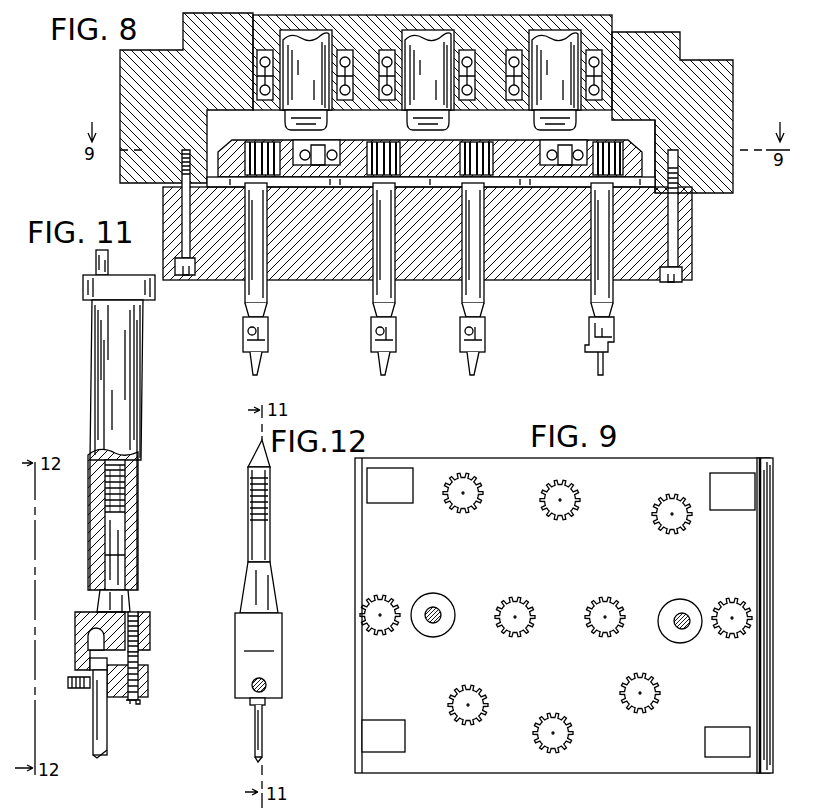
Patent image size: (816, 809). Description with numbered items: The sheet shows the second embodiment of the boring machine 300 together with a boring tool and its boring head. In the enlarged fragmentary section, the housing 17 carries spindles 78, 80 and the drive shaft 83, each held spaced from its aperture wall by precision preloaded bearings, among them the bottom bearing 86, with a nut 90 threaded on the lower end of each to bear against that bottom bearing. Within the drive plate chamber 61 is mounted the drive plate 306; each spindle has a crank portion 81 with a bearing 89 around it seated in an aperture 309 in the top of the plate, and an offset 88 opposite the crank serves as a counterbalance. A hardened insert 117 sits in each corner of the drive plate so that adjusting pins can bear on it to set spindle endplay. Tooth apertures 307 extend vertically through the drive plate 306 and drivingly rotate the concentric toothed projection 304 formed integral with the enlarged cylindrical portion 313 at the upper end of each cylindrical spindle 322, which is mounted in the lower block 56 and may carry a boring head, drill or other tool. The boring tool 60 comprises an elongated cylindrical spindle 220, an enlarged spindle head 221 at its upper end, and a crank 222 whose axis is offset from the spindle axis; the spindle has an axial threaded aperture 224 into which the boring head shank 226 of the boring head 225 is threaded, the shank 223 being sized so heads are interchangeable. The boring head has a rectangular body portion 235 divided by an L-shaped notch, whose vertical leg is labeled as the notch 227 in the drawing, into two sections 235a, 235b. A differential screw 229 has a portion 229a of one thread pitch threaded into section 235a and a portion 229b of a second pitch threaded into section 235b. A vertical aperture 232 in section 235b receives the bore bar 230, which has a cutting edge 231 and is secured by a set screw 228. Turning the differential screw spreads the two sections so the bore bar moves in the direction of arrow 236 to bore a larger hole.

In FIG. 8, the housing 17 is at (733, 183).
In FIG. 8, the second embodiment of the boring machine 300 is at (738, 118).
In FIG. 8, the spindle 78 is at (318, 75).
In FIG. 8, the bottom precision preloaded bearing 86 is at (298, 95).
In FIG. 8, the drive shaft 83 is at (440, 78).
In FIG. 8, the spindle 80 is at (567, 78).
In FIG. 8, the drive plate chamber 61 is at (655, 135).
In FIG. 8, the aperture 309 is at (368, 160).
In FIG. 8, the tooth aperture 307 is at (440, 160).
In FIG. 9, the tooth aperture 307 is at (560, 500).
In FIG. 8, the concentric toothed projection 304 is at (255, 165).
In FIG. 9, the concentric toothed projection 304 is at (463, 500).
In FIG. 8, the nut 90 is at (320, 118).
In FIG. 8, the bearing 89 is at (540, 155).
In FIG. 9, the bearing 89 is at (682, 630).
In FIG. 8, the offset 88 is at (565, 148).
In FIG. 8, the crank portion 81 is at (587, 150).
In FIG. 9, the crank portion 81 is at (672, 607).
In FIG. 8, the drive plate 306 is at (422, 187).
In FIG. 9, the drive plate 306 is at (590, 773).
In FIG. 8, the block 56 is at (685, 255).
In FIG. 8, the enlarged cylindrical portion 313 is at (272, 190).
In FIG. 8, the cylindrical spindle 322 is at (267, 298).
In FIG. 8, the boring head 225 is at (614, 335).
In FIG. 11, the boring head 225 is at (152, 614).
In FIG. 12, the boring head 225 is at (233, 612).
In FIG. 11, the crank 222 is at (108, 262).
In FIG. 11, the spindle head 221 is at (118, 290).
In FIG. 11, the spindle 220 is at (128, 365).
In FIG. 11, the boring tool 60 is at (142, 422).
In FIG. 11, the threaded aperture 224 is at (128, 530).
In FIG. 11, the shank 223 is at (125, 506).
In FIG. 12, the shank 223 is at (272, 510).
In FIG. 11, the boring head shank 226 is at (122, 598).
In FIG. 12, the boring head shank 226 is at (260, 538).
In FIG. 11, the body portion 235 is at (80, 622).
In FIG. 12, the body portion 235 is at (258, 655).
In FIG. 11, the first body section 235a is at (146, 640).
In FIG. 11, the bore 227 is at (88, 642).
In FIG. 11, the first pitch portion of differential screw 229a is at (142, 650).
In FIG. 11, the second body section 235b is at (150, 673).
In FIG. 11, the differential screw 229 is at (148, 685).
In FIG. 11, the second pitch portion of differential screw 229b is at (142, 698).
In FIG. 11, the vertical aperture 232 is at (90, 662).
In FIG. 11, the bore bar 230 is at (105, 718).
In FIG. 12, the bore bar 230 is at (265, 733).
In FIG. 11, the set screw 228 is at (70, 685).
In FIG. 12, the set screw 228 is at (268, 688).
In FIG. 11, the cutting edge 231 is at (107, 752).
In FIG. 12, the cutting edge 231 is at (264, 755).
In FIG. 11, the arrow 236 is at (77, 727).
In FIG. 9, the hardened insert 117 is at (400, 495).